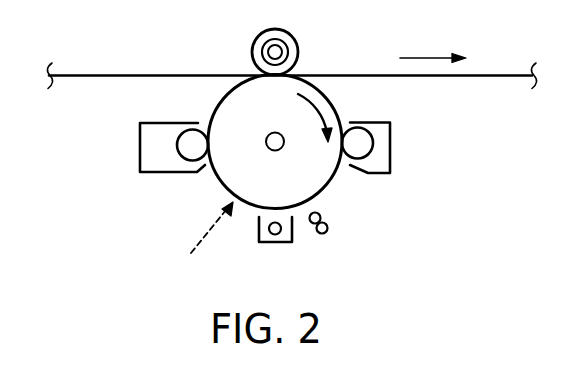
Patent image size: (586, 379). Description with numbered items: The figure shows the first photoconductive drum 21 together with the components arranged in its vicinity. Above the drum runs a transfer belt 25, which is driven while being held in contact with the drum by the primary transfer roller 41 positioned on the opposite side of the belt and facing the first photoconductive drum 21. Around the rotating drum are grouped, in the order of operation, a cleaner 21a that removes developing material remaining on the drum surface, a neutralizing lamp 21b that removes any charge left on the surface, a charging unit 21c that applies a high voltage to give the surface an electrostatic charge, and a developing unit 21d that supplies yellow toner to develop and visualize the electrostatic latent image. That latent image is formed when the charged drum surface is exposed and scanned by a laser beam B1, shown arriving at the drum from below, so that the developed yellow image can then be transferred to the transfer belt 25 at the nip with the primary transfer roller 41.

The transfer belt 25 is at (153, 72).
The primary transfer roller 41 is at (298, 38).
The first photoconductive drum 21 is at (323, 190).
The developing unit 21d is at (140, 142).
The cleaner 21a is at (391, 138).
The charging unit 21c is at (283, 242).
The neutralizing lamp 21b is at (328, 229).
The laser beam B1 is at (207, 236).